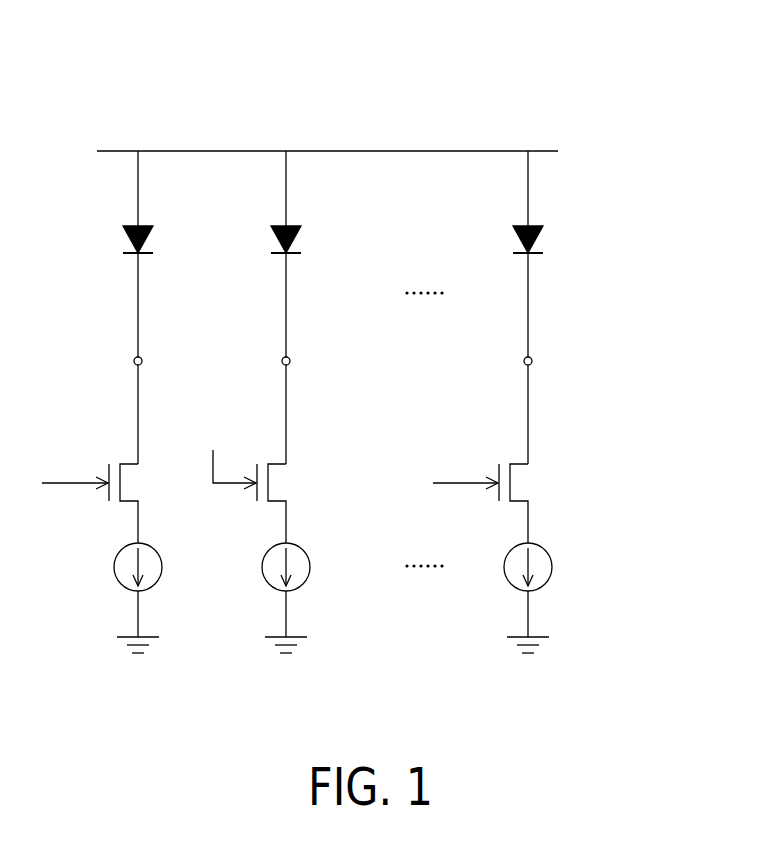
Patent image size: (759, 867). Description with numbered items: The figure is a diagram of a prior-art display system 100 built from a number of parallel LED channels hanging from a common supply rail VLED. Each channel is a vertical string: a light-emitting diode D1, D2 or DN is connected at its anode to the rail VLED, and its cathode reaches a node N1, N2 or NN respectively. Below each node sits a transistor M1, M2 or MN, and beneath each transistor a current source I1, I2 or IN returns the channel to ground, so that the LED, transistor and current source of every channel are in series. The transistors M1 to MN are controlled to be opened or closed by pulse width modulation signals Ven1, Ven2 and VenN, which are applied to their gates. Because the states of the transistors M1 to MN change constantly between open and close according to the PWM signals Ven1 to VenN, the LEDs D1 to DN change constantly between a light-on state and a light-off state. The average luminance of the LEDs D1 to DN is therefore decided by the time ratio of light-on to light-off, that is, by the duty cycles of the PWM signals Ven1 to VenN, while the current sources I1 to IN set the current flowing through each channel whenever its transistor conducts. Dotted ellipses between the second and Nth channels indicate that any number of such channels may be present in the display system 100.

The display system 100 is at (618, 76).
The LED supply voltage VLED is at (327, 133).
The light-emitting diode D1 is at (155, 254).
The light-emitting diode D2 is at (303, 254).
The light-emitting diode DN is at (547, 254).
The node N1 is at (154, 361).
The node N2 is at (302, 361).
The node NN is at (547, 361).
The transistor M1 is at (147, 454).
The transistor M2 is at (295, 454).
The transistor MN is at (539, 454).
The pulse width modulation signal Ven1 is at (71, 468).
The pulse width modulation signal Ven2 is at (232, 454).
The pulse width modulation signal VenN is at (461, 467).
The current source I1 is at (149, 598).
The current source I2 is at (299, 598).
The current source IN is at (542, 598).